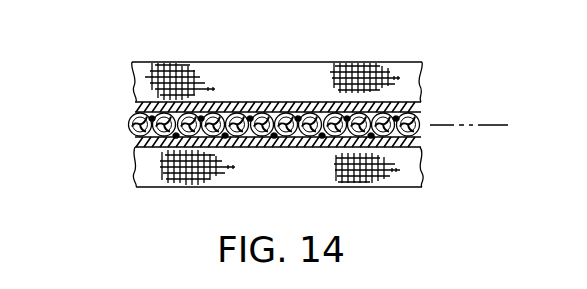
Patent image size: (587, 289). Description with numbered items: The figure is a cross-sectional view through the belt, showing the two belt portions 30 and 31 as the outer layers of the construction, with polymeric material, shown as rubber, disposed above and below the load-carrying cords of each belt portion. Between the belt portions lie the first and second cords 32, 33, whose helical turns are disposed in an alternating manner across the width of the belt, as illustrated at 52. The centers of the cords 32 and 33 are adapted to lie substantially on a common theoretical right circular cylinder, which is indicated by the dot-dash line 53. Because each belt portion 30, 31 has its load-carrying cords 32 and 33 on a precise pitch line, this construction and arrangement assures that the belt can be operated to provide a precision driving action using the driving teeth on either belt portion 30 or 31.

The belt portion 30 is at (428, 71).
The belt portion 31 is at (405, 190).
The first cord 32 is at (418, 112).
The second cord 33 is at (283, 138).
The alternating arrangement of cord turns 52 is at (122, 113).
The dot-dash line 53 is at (453, 125).